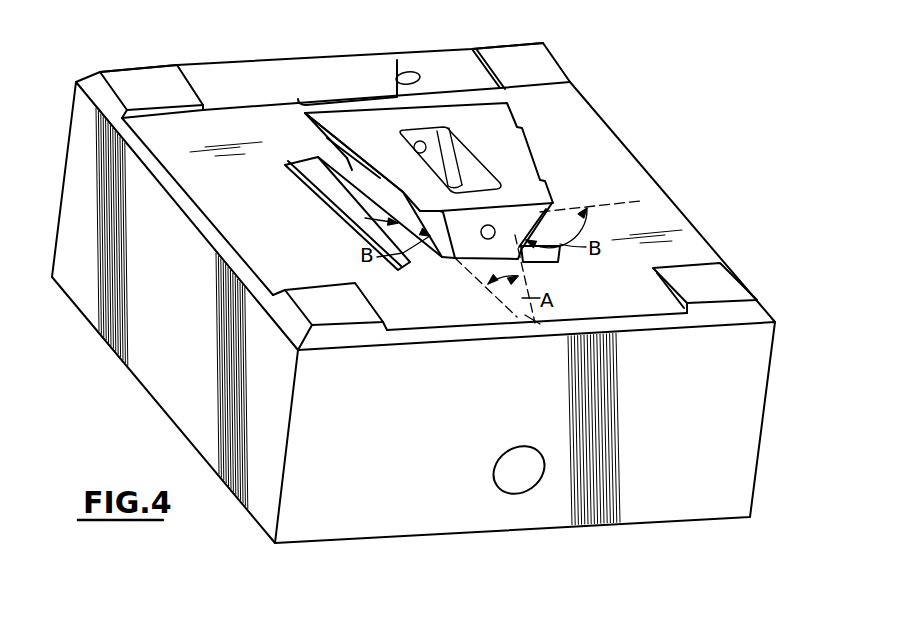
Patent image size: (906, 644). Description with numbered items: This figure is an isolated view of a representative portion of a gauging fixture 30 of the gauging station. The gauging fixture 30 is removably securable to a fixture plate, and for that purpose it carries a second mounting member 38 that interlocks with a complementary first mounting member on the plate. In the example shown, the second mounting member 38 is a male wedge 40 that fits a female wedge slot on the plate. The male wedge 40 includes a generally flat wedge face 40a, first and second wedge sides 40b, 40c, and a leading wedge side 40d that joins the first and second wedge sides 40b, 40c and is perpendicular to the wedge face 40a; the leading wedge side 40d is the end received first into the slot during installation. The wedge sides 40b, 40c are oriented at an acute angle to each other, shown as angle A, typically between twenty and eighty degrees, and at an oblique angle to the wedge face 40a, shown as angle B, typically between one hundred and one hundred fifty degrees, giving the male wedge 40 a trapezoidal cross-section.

The gauging fixture 30 is at (175, 427).
The second mounting member 38 is at (531, 143).
The male wedge 40 is at (397, 60).
The wedge face 40a is at (497, 122).
The first wedge side 40b is at (350, 191).
The second wedge side 40c is at (548, 226).
The leading wedge side 40d is at (527, 254).